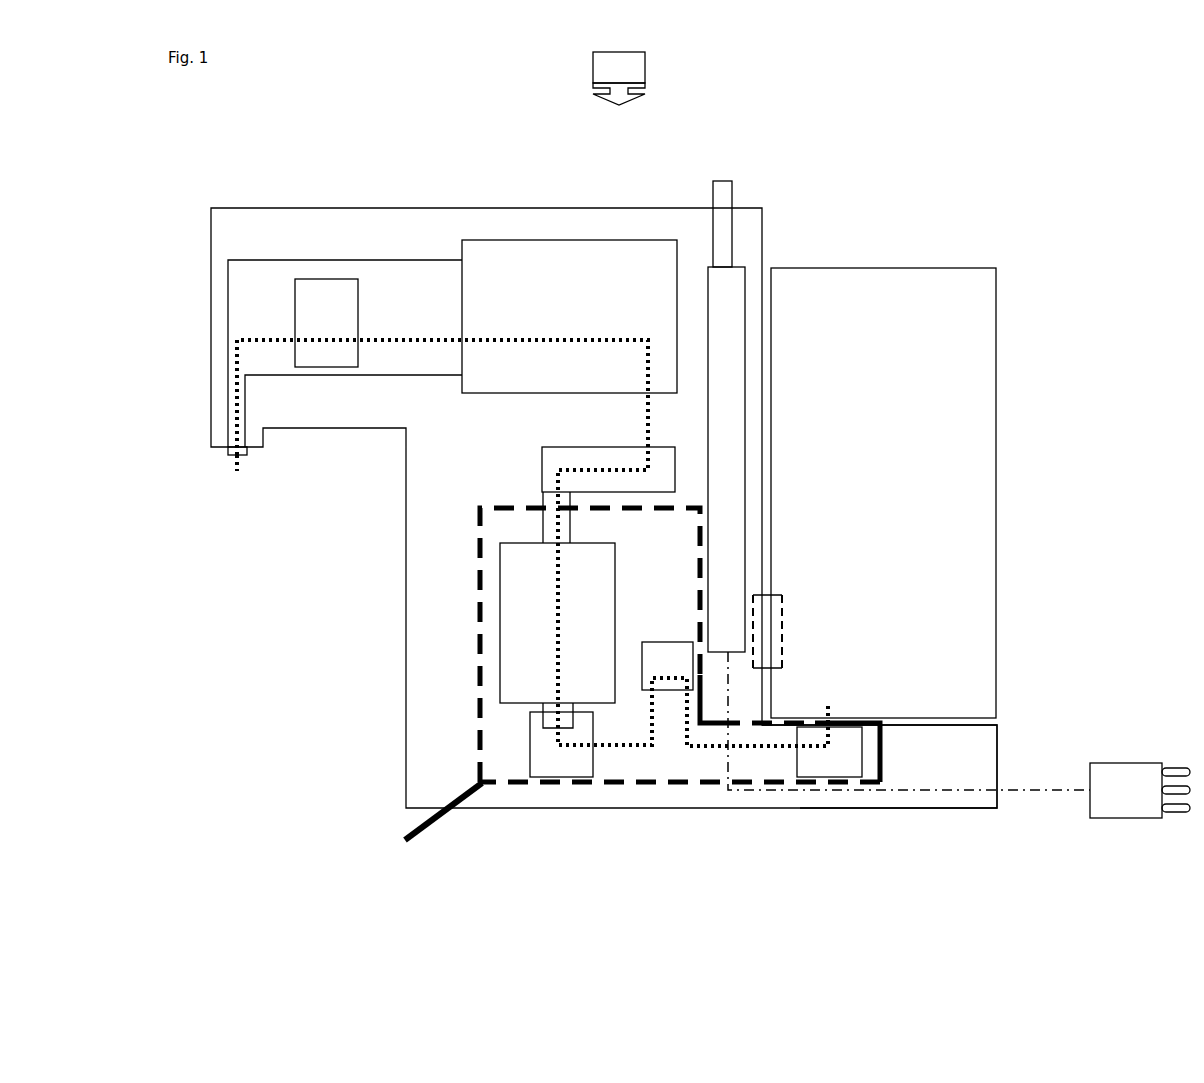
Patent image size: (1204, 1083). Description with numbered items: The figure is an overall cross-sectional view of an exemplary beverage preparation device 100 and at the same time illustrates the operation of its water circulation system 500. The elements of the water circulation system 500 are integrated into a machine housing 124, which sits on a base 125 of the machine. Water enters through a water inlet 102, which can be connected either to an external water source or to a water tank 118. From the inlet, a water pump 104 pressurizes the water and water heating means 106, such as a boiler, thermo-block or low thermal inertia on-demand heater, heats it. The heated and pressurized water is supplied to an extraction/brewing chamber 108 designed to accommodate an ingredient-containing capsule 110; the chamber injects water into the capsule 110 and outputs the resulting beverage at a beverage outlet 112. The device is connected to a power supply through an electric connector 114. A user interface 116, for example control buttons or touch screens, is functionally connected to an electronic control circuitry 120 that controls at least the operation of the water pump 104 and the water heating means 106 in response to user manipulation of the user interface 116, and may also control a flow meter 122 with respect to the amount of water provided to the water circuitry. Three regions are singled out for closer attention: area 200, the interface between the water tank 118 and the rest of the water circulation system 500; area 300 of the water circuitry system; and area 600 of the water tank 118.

The beverage preparation device 100 is at (619, 78).
The water inlet 102 is at (826, 752).
The water pump 104 is at (525, 630).
The water heating means 106 is at (549, 262).
The extraction/brewing chamber 108 is at (393, 260).
The capsule 110 is at (321, 285).
The beverage outlet 112 is at (226, 384).
The electric connector 114 is at (1058, 788).
The user interface 116 is at (712, 196).
The water tank 118 is at (840, 286).
The electronic control circuitry 120 is at (725, 320).
The flow meter 122 is at (655, 661).
The machine housing 124 is at (239, 206).
The base 125 is at (958, 804).
The area of interface between water tank and water circuitry system 200 is at (847, 752).
The area of the water circuitry system 300 is at (625, 686).
The water circulation system 500 is at (392, 342).
The area of the water tank 600 is at (782, 595).